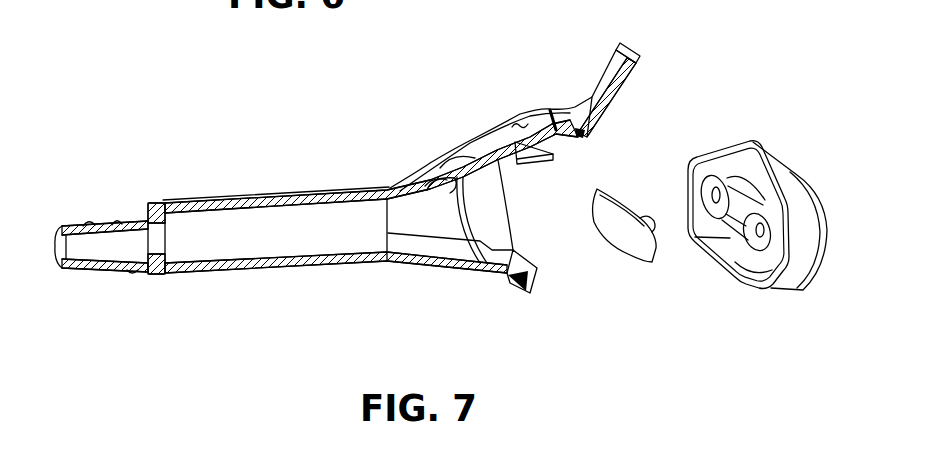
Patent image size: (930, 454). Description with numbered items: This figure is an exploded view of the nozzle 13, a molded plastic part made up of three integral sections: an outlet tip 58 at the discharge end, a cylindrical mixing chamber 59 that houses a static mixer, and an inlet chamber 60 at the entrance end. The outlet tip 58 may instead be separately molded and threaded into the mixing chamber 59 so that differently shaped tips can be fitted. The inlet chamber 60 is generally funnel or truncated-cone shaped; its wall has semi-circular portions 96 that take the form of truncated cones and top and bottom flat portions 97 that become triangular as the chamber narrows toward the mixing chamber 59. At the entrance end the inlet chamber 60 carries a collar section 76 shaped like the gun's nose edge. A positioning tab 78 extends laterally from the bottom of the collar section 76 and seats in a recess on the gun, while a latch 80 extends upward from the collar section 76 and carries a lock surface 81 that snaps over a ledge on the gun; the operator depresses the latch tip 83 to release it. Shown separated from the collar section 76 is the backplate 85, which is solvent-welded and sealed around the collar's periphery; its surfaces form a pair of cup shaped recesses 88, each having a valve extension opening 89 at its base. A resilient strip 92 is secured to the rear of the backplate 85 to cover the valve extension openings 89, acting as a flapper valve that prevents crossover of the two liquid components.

The nozzle 13 is at (365, 167).
The outlet tip 58 is at (73, 228).
The mixing chamber 59 is at (222, 198).
The inlet chamber 60 is at (477, 137).
The collar section 76 is at (507, 230).
The positioning tab 78 is at (537, 273).
The latch 80 is at (520, 117).
The lock surface 81 is at (579, 135).
The latch tip 83 is at (638, 58).
The backplate 85 is at (759, 205).
The cup shaped recess 88 is at (780, 257).
The valve extension opening 89 is at (778, 207).
The resilient strip 92 is at (648, 262).
The semi-circular portions 96 is at (432, 212).
The flat portions 97 is at (426, 176).